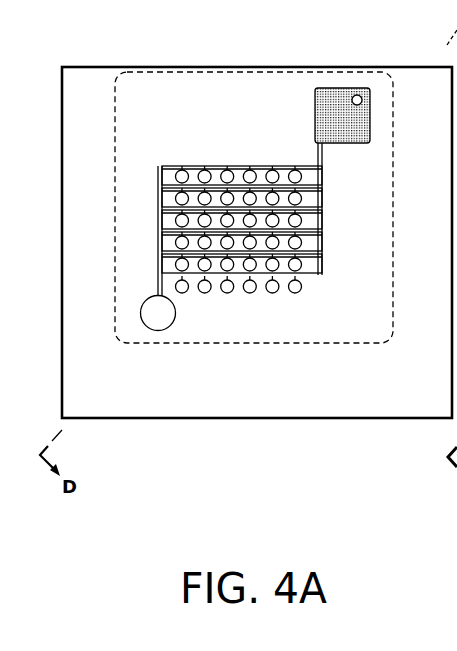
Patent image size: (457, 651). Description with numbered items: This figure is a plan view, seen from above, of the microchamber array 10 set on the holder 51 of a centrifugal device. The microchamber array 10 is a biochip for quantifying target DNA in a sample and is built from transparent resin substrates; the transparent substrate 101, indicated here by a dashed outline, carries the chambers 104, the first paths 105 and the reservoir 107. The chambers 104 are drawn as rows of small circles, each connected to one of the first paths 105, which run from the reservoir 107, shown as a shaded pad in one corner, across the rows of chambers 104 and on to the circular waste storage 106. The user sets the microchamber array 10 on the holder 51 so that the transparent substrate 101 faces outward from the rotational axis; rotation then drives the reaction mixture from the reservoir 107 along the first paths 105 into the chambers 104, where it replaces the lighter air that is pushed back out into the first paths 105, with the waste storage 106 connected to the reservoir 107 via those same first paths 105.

The microchamber array 10 is at (233, 88).
The holder 51 is at (88, 80).
The transparent substrate 101 is at (128, 245).
The chambers 104 is at (293, 245).
The first paths 105 is at (322, 178).
The waste storage 106 is at (158, 331).
The reservoir 107 is at (330, 97).